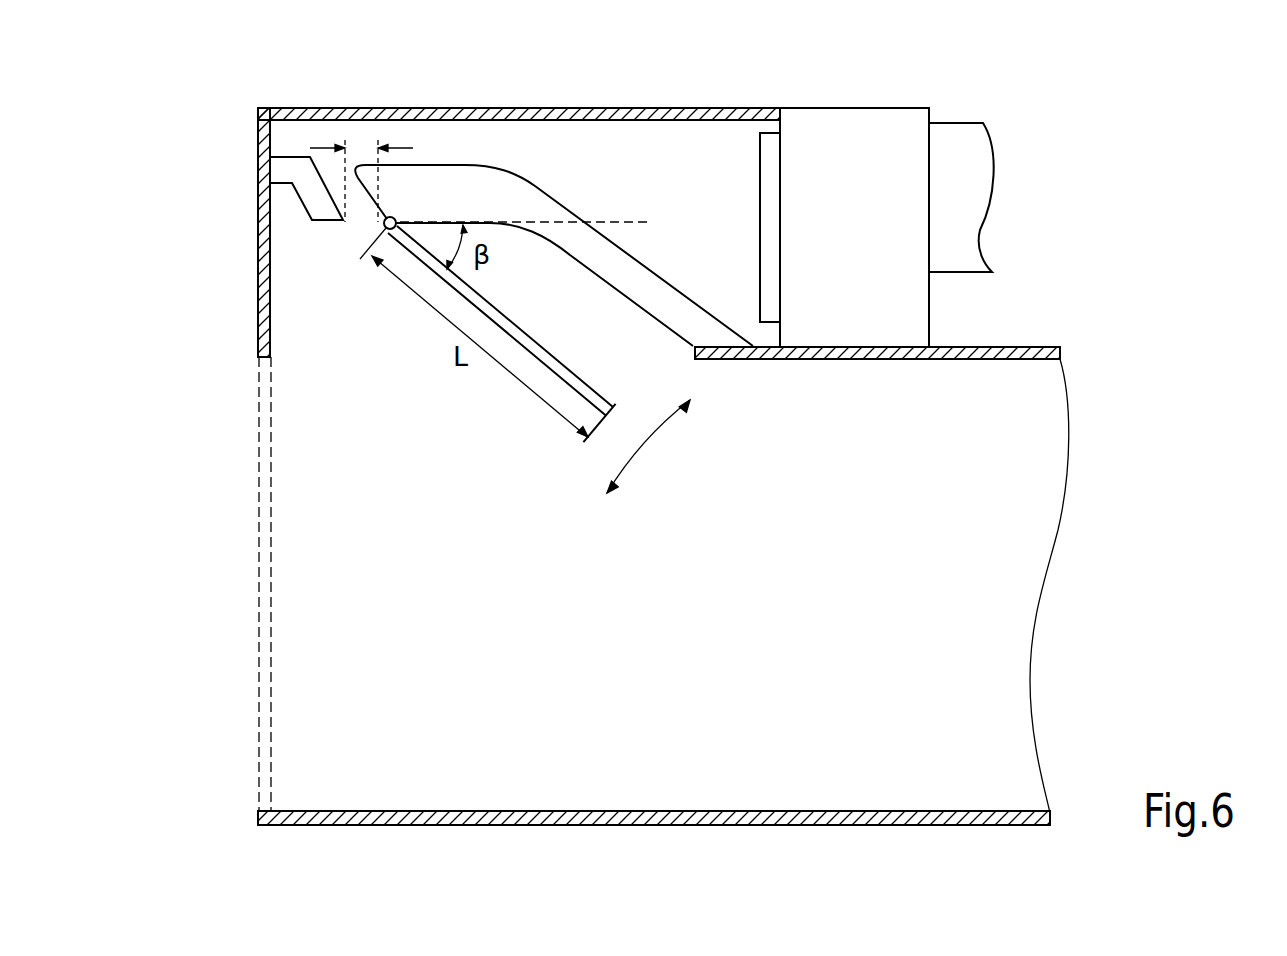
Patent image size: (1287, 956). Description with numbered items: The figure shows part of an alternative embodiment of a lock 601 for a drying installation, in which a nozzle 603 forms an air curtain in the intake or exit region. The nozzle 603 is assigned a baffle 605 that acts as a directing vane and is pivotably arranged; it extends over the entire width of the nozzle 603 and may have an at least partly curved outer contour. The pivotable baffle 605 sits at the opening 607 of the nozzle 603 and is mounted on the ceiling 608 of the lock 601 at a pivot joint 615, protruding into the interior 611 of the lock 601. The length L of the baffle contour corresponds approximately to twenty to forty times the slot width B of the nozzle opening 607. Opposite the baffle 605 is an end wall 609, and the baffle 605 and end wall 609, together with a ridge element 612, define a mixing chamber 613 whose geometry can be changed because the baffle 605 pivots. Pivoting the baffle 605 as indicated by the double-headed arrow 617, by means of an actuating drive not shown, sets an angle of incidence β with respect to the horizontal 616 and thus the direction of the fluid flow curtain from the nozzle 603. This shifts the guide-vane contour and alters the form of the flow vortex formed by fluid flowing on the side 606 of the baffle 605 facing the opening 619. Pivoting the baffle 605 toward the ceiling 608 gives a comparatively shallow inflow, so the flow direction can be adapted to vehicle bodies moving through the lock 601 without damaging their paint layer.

The lock 601 is at (1112, 150).
The nozzle 603 is at (313, 134).
The baffle 605 is at (517, 318).
The side of the baffle 606 is at (540, 367).
The opening 607 is at (359, 221).
The ceiling 608 is at (892, 361).
The end wall 609 is at (258, 203).
The interior 611 is at (687, 648).
The ridge element 612 is at (270, 163).
The mixing chamber 613 is at (281, 259).
The pivot joint 615 is at (398, 218).
The horizontal 616 is at (621, 220).
The double-headed arrow 617 is at (655, 452).
The opening 619 is at (273, 576).